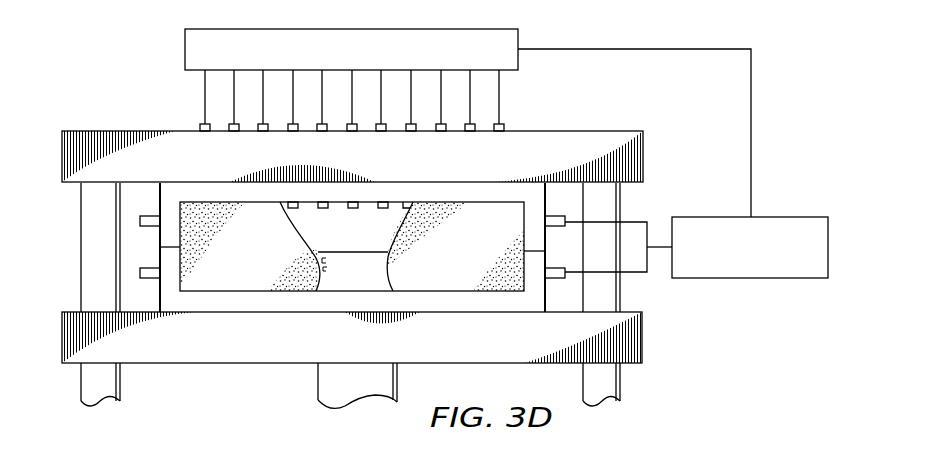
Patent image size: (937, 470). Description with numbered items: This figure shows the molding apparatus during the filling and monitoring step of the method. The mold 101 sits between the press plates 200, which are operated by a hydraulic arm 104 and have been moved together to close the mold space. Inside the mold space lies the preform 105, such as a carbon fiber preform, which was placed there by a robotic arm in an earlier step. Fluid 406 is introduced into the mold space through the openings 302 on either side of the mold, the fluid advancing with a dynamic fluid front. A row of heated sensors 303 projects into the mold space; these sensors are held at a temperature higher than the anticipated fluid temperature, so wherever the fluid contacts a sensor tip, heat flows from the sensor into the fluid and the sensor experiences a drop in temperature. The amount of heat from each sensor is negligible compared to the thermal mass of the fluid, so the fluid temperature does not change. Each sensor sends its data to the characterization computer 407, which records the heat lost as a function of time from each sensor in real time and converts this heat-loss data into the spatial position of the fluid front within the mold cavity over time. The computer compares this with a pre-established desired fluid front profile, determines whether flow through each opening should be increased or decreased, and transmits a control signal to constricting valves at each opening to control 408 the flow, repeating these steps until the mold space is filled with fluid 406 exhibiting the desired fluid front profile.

The characterization computer 407 is at (185, 48).
The heated sensors 303 is at (183, 118).
The press plates 200 is at (643, 157).
The openings 302 is at (152, 217).
The mold 101 is at (451, 302).
The preform 105 is at (338, 283).
The fluid 406 is at (300, 222).
The hydraulic arm 104 is at (318, 381).
The valve control 408 is at (778, 278).